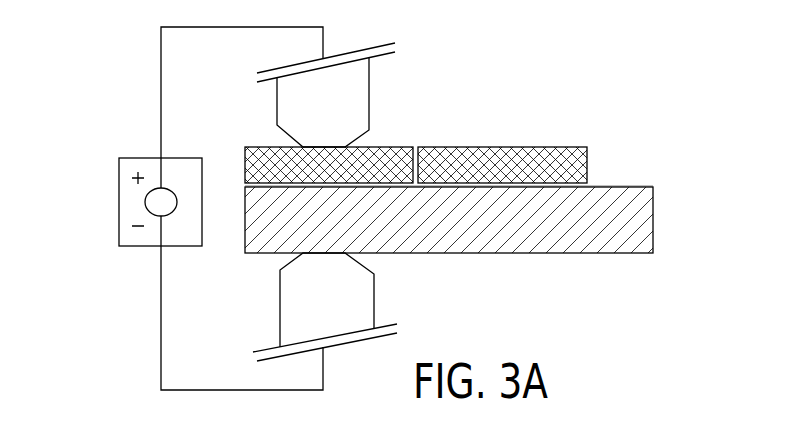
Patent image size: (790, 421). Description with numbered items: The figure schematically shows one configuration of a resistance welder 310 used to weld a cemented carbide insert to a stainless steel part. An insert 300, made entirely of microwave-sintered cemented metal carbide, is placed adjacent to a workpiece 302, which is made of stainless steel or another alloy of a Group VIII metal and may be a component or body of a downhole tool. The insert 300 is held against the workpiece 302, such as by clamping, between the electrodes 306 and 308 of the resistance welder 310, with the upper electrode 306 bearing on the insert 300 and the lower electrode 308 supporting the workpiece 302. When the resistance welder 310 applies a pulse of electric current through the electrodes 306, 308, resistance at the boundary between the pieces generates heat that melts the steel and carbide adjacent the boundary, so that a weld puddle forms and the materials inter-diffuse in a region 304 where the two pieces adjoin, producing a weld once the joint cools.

The insert 300 is at (395, 146).
The workpiece 302 is at (655, 222).
The region 304 is at (243, 186).
The electrode 306 is at (370, 81).
The electrode 308 is at (374, 300).
The resistance welder 310 is at (119, 205).